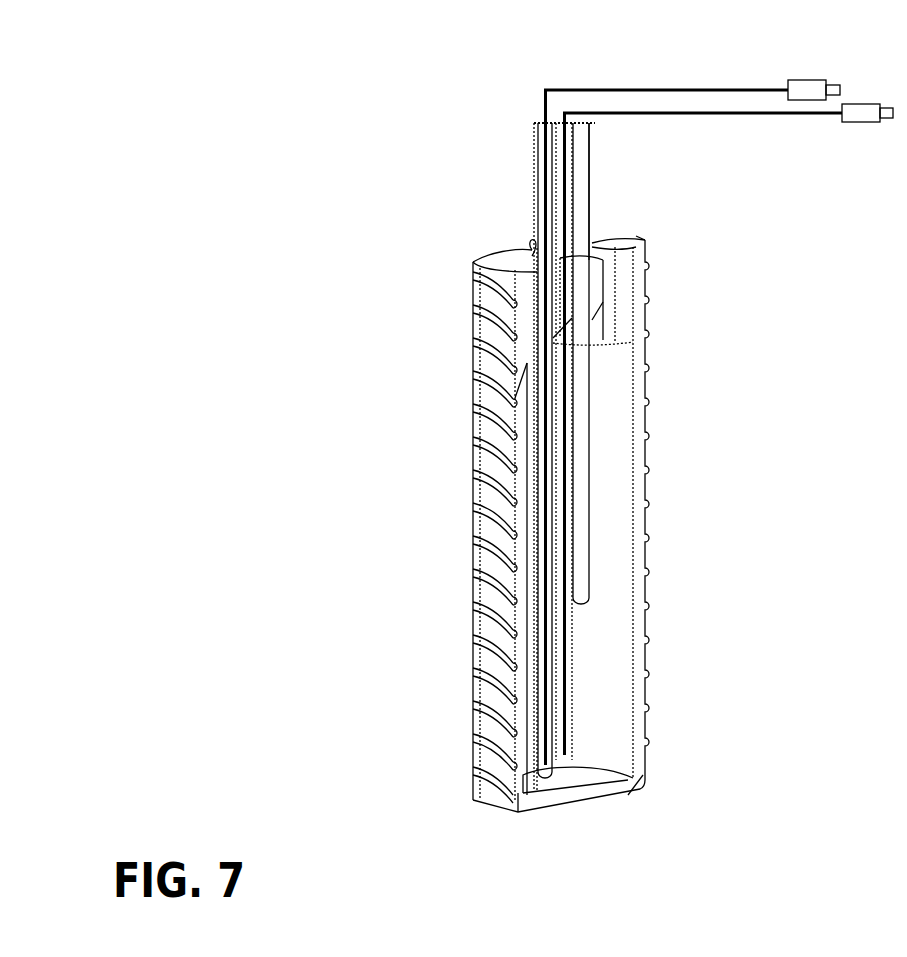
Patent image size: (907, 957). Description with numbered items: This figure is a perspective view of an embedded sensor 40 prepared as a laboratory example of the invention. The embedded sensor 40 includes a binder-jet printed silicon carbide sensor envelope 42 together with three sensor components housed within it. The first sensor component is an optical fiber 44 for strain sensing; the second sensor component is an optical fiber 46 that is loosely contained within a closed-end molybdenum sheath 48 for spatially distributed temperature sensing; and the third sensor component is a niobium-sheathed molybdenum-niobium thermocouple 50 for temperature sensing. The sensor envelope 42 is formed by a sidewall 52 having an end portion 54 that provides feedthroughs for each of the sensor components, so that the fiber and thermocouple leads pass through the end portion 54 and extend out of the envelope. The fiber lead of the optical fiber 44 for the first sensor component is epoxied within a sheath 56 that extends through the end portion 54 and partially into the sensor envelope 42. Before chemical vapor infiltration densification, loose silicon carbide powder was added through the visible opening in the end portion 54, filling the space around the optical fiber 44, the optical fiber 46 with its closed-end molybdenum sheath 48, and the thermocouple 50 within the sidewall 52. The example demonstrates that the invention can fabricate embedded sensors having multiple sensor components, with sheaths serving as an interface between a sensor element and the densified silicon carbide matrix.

The embedded sensor 40 is at (441, 119).
The sensor envelope 42 is at (552, 808).
The optical fiber 44 is at (563, 615).
The optical fiber 46 is at (543, 705).
The closed-end Mo sheath 48 is at (535, 750).
The Nb-sheathed Mo—Nb thermocouple 50 is at (583, 438).
The sidewall 52 is at (647, 375).
The end portion 54 is at (633, 242).
The sheath 56 is at (557, 205).